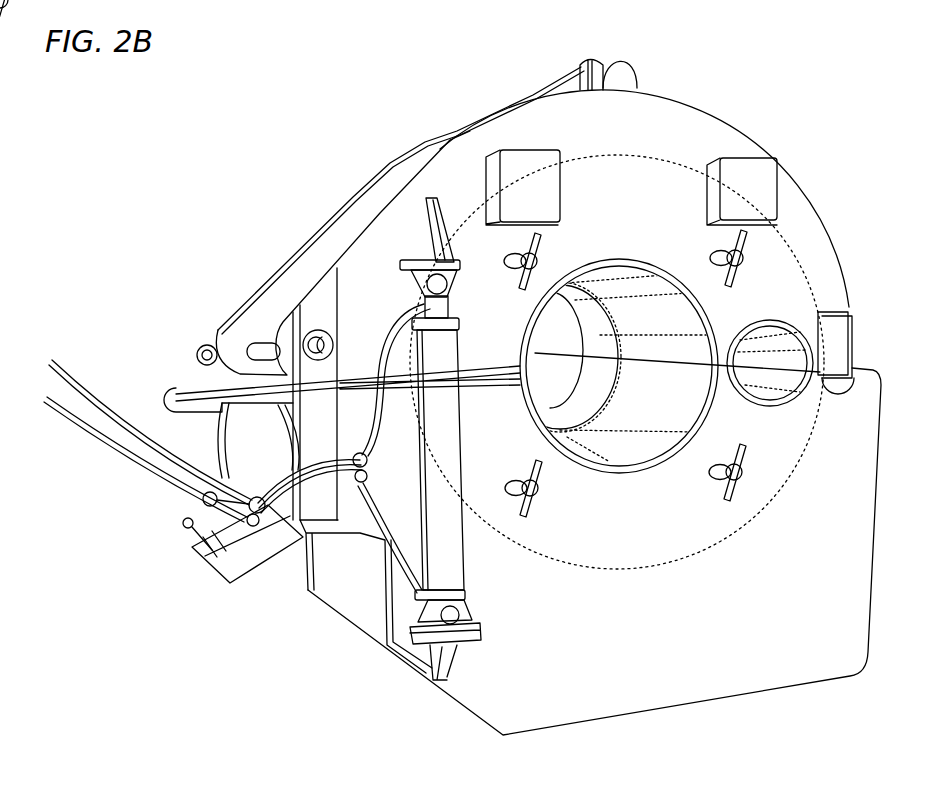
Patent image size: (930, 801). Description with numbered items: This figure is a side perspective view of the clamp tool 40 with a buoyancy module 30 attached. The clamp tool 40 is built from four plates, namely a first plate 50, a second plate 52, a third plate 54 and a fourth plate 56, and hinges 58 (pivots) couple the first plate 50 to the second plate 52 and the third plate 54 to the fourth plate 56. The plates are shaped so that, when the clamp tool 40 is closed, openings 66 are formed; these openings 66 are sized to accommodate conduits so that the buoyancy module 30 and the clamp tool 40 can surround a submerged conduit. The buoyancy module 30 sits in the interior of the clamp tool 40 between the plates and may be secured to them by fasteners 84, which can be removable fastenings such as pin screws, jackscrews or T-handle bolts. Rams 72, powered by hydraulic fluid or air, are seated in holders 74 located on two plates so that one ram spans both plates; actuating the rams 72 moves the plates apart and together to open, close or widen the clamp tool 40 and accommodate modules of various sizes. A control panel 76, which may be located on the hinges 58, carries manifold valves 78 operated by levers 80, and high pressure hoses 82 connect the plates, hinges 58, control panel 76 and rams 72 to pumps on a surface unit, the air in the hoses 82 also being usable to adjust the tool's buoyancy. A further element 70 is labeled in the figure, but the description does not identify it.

The buoyancy module 30 is at (633, 182).
The clamp tool 40 is at (818, 100).
The first plate 50 is at (611, 133).
The second plate 52 is at (656, 655).
The third plate 54 is at (327, 238).
The fourth plate 56 is at (362, 628).
The hinges 58 is at (325, 325).
The openings 66 is at (640, 452).
The coupling rod 70 is at (192, 352).
The rams 72 is at (558, 80).
The holders 74 is at (634, 80).
The control panel 76 is at (247, 568).
The manifold valves 78 is at (369, 457).
The levers 80 is at (186, 518).
The high pressure hoses 82 is at (80, 385).
The fasteners 84 is at (540, 260).